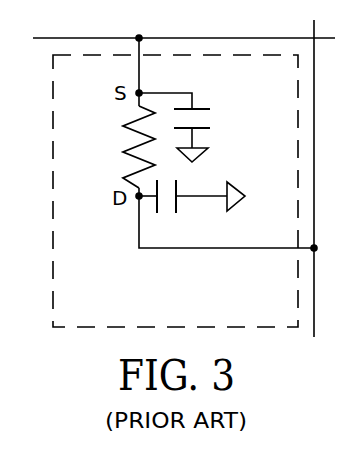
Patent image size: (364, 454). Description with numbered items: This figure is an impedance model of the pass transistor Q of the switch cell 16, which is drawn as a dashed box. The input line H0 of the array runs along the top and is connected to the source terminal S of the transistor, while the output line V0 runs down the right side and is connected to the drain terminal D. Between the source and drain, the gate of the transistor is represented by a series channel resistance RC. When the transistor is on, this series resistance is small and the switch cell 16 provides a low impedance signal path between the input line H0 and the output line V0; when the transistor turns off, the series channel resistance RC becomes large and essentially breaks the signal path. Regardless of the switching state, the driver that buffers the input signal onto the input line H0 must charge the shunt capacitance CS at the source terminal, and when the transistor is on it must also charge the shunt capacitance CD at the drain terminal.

The switch cell 16 is at (290, 316).
The input line H0 is at (207, 38).
The output line V0 is at (315, 78).
The series channel resistance RC is at (115, 147).
The shunt capacitance CS is at (193, 127).
The shunt capacitance CD is at (192, 213).